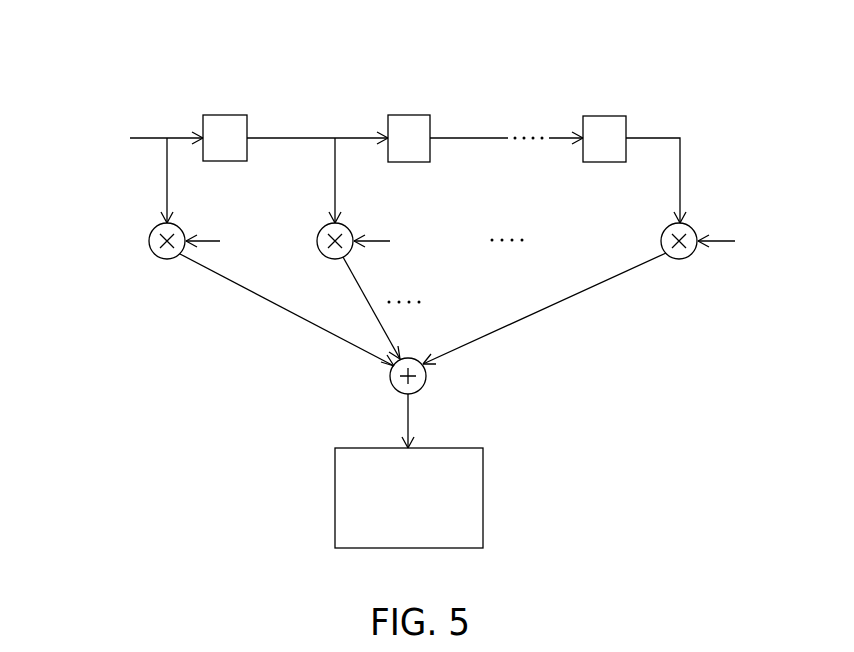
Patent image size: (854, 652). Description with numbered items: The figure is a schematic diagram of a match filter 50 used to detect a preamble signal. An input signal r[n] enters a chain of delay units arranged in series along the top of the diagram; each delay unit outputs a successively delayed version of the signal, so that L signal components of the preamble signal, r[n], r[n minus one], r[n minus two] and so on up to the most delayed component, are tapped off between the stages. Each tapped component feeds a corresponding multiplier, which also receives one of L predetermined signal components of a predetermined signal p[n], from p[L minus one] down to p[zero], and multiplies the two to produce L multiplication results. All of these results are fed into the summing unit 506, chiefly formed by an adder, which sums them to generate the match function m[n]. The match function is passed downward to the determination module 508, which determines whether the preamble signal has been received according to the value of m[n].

The match filter 50 is at (158, 64).
The summing unit 506 is at (427, 378).
The determination module 508 is at (485, 498).